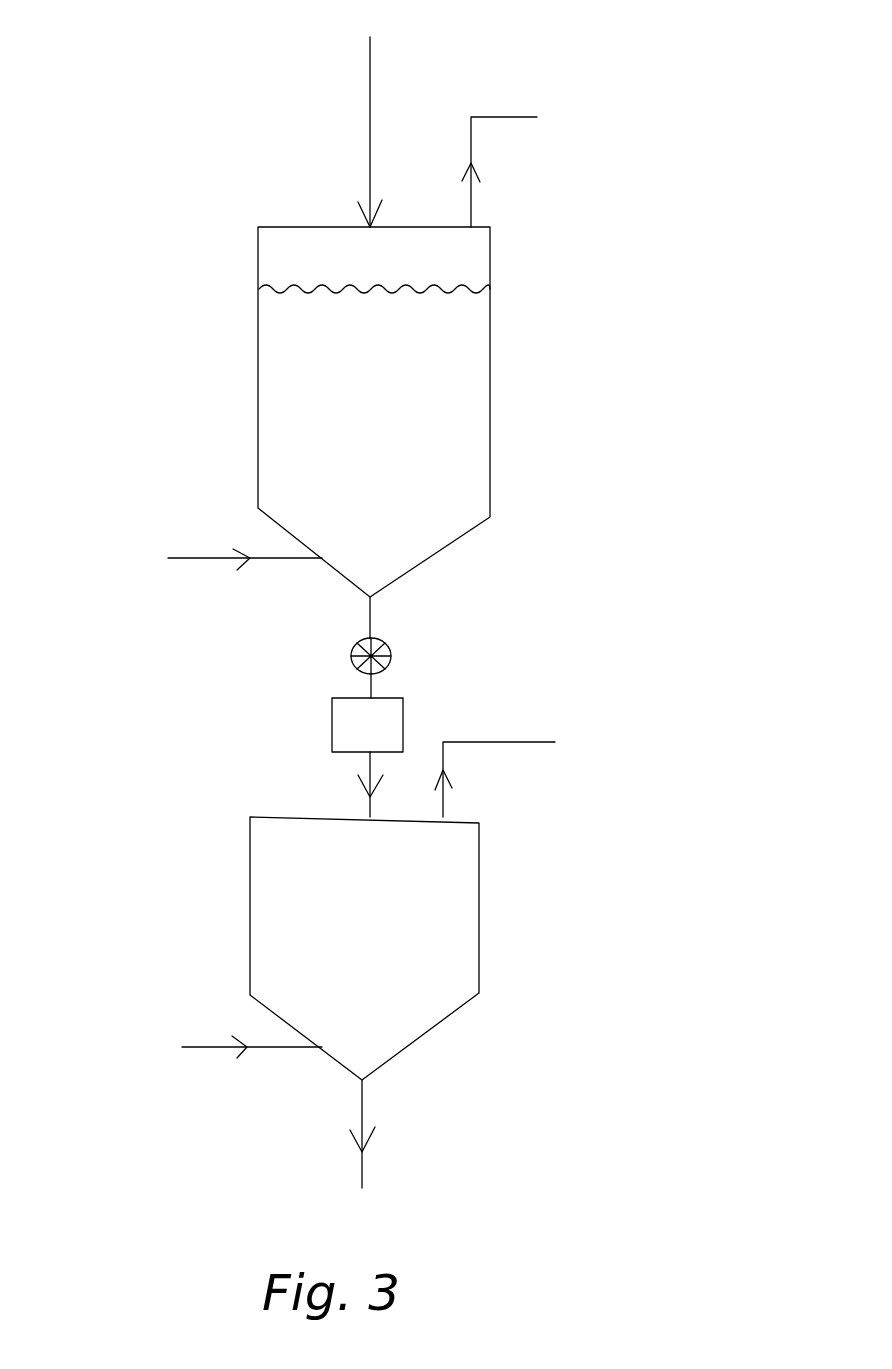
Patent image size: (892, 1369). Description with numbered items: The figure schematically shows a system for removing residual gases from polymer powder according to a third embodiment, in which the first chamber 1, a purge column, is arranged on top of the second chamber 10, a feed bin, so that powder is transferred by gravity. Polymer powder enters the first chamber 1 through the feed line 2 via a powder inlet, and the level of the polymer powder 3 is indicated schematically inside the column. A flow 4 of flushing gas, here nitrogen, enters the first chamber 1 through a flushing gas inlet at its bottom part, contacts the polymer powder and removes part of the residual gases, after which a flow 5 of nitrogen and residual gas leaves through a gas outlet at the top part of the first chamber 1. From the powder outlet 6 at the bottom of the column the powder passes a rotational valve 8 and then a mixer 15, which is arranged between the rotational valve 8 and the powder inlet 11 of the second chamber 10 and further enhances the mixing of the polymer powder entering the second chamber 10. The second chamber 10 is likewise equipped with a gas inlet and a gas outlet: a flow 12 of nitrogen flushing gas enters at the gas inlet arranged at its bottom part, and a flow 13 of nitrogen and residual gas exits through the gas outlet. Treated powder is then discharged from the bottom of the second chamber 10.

The first chamber 1 is at (490, 377).
The feed line 2 is at (370, 130).
The level of the polymer powder 3 is at (285, 288).
The flow of flushing gas 4 is at (202, 563).
The flow of nitrogen and residual gas 5 is at (507, 117).
The powder outlet 6 is at (370, 598).
The rotational valve 8 is at (391, 655).
The second chamber 10 is at (480, 952).
The powder inlet 11 is at (372, 817).
The flow of flushing gas 12 is at (210, 1050).
The flow of nitrogen and residual gas 13 is at (533, 742).
The mixer 15 is at (332, 735).